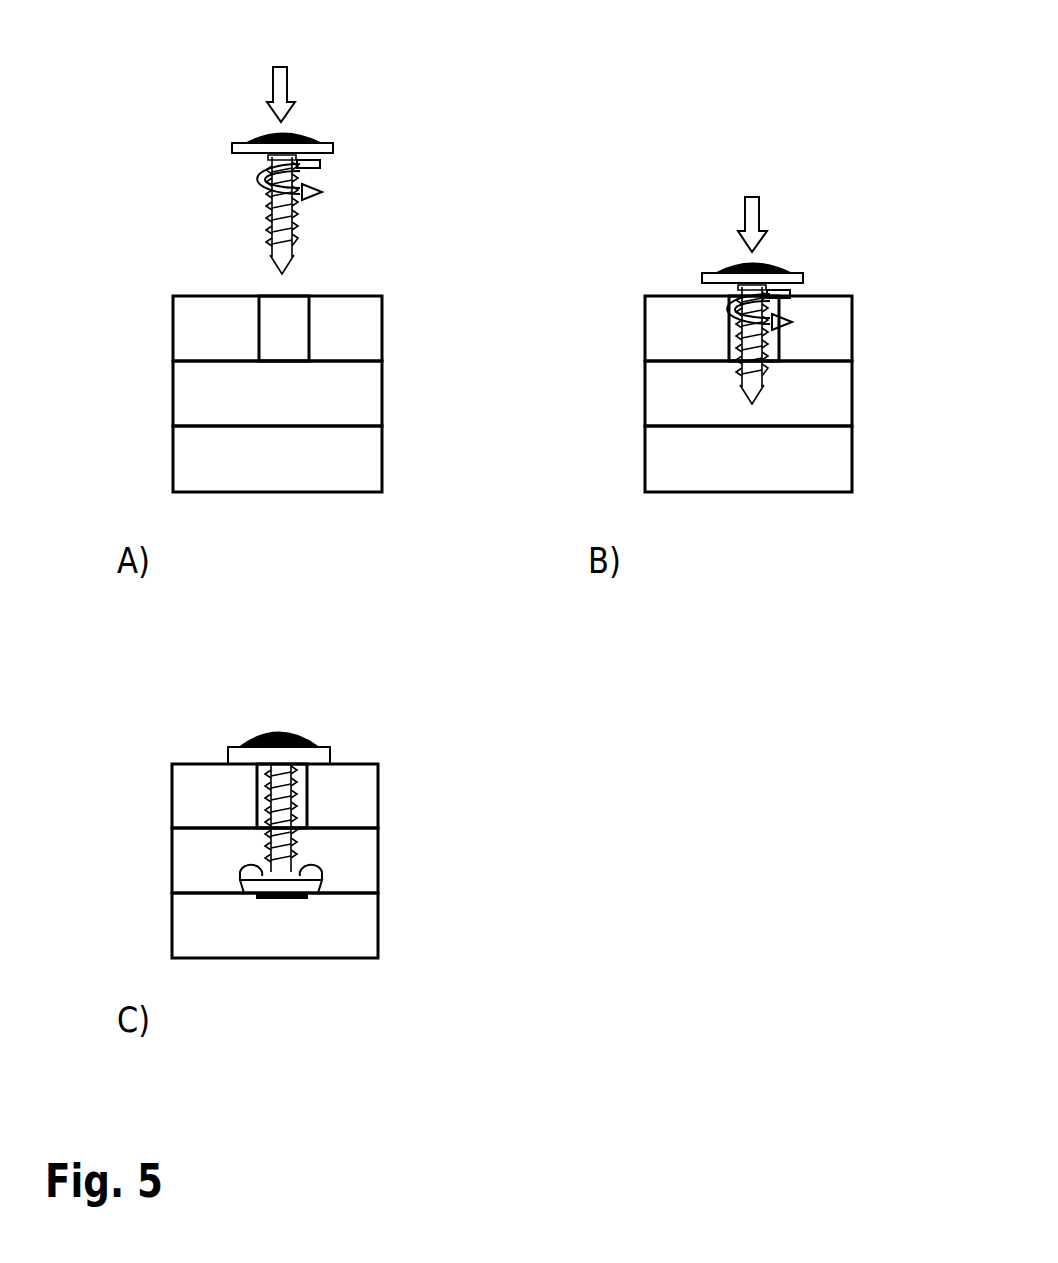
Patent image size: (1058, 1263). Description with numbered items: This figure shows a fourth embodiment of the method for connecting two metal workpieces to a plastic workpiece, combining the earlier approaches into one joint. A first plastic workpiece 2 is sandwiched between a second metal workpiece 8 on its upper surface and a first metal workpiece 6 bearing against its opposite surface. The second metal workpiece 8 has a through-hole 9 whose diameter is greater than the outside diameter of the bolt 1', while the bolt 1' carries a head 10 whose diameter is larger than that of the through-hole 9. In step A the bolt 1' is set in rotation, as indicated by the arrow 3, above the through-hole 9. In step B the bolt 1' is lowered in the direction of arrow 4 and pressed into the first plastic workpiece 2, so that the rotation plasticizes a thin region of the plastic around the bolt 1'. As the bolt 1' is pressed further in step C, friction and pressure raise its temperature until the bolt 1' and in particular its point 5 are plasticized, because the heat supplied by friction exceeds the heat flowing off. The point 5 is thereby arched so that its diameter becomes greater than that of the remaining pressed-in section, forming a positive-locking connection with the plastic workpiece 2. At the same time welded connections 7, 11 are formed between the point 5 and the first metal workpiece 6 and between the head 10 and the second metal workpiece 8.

The bolt 1' is at (606, 530).
The first plastic workpiece 2 is at (195, 858).
The arrow 3 is at (247, 182).
The arrow 4 is at (745, 220).
The point 5 is at (910, 408).
The first metal workpiece 6 is at (195, 930).
The welded connection 7 is at (288, 897).
The second metal workpiece 8 is at (197, 800).
The through-hole 9 is at (910, 325).
The head 10 is at (278, 750).
The welded connection 11 is at (318, 765).